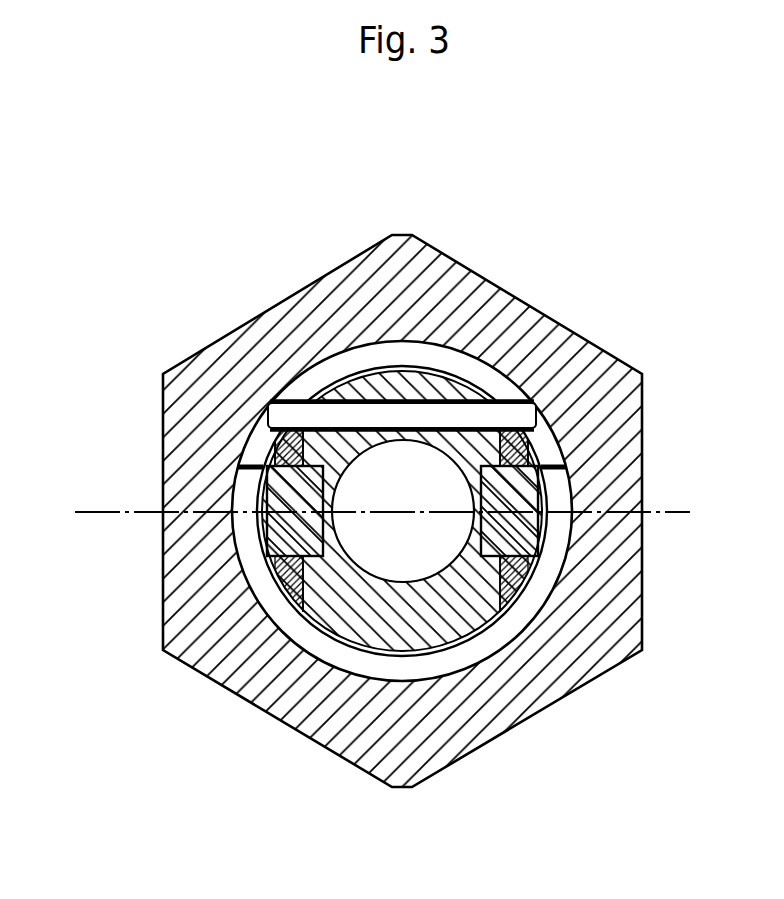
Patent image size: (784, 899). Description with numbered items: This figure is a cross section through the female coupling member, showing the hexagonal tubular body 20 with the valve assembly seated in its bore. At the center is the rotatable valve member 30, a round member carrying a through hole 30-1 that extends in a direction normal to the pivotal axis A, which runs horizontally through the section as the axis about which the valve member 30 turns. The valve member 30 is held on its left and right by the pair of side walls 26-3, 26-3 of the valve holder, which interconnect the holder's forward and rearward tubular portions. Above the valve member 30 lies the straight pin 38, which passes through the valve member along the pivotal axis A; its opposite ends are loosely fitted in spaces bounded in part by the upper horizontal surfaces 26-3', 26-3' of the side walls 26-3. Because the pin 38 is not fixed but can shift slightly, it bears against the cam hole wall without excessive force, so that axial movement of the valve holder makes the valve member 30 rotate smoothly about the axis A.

The tubular body 20 is at (267, 307).
The rotatable valve member 30 is at (367, 368).
The through hole 30-1 is at (378, 552).
The straight pin 38 is at (425, 417).
The side wall 26-3 is at (391, 470).
The upper horizontal surface 26-3' is at (362, 348).
The pivotal axis A is at (113, 513).